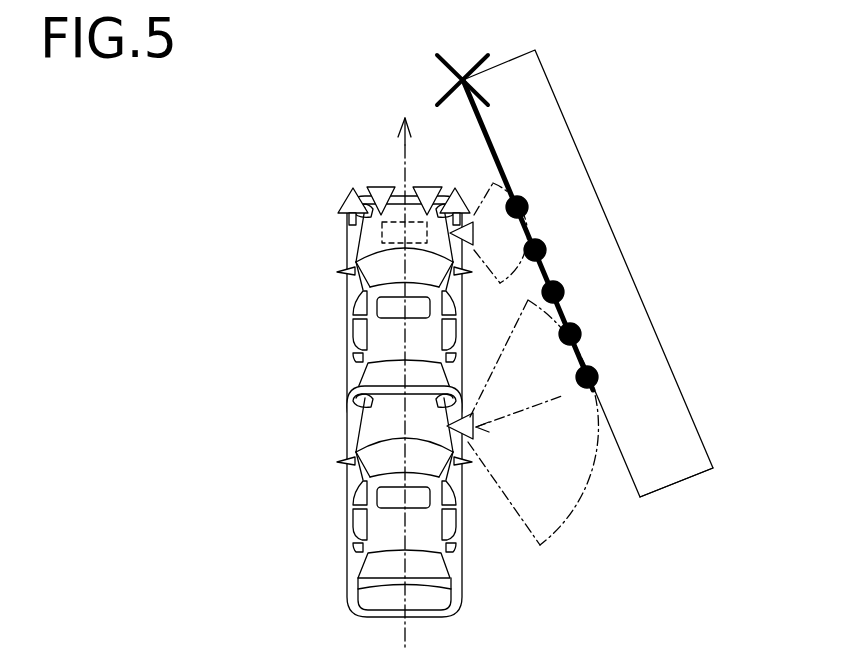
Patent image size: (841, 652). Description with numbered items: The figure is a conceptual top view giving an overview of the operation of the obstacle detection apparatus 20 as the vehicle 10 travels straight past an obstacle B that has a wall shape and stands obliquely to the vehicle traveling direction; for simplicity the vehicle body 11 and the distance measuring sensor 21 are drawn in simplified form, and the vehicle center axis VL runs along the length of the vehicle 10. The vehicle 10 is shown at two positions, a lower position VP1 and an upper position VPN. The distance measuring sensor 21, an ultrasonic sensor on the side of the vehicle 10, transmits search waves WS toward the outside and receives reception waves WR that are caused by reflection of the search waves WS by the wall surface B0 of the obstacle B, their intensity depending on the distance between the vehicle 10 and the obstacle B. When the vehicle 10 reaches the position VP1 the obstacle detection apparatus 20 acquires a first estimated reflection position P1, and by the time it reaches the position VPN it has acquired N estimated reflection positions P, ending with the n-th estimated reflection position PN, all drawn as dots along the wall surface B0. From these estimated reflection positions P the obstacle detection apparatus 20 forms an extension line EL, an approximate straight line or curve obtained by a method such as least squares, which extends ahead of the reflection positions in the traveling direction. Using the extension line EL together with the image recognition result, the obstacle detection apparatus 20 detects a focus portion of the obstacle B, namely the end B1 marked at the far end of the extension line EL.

The vehicle 10 is at (343, 367).
The vehicle body 11 is at (355, 261).
The obstacle detection apparatus 20 is at (383, 239).
The distance measuring sensor 21 is at (452, 427).
The vehicle center axis VL is at (402, 306).
The position VPN is at (152, 276).
The position VP1 is at (152, 511).
The obstacle B is at (600, 237).
The wall surface B0 is at (623, 467).
The end B1 is at (463, 80).
The extension line EL is at (487, 125).
The n-th estimated reflection position PN is at (526, 203).
The estimated reflection position P is at (563, 288).
The first estimated reflection position P1 is at (597, 368).
The search waves WS is at (495, 487).
The reception waves WR is at (543, 402).